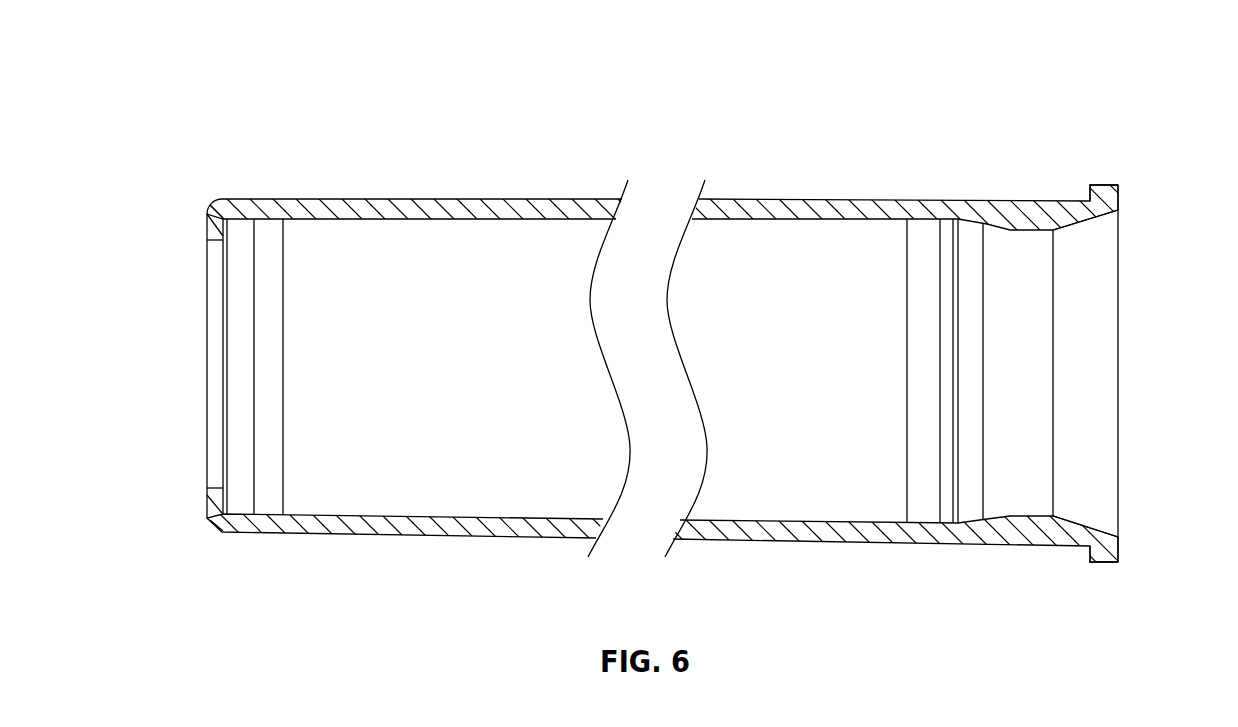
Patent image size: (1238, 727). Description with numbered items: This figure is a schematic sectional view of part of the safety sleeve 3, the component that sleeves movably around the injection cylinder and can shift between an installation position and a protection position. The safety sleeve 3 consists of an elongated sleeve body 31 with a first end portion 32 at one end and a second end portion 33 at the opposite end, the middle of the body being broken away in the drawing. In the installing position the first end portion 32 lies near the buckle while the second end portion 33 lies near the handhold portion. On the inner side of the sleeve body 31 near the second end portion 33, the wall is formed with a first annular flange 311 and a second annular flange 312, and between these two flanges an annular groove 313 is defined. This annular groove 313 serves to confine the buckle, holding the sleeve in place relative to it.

The safety sleeve 3 is at (318, 162).
The sleeve body 31 is at (455, 198).
The first annular flange 311 is at (1030, 232).
The second annular flange 312 is at (940, 227).
The annular groove 313 is at (972, 219).
The first end portion 32 is at (207, 213).
The second end portion 33 is at (1104, 186).